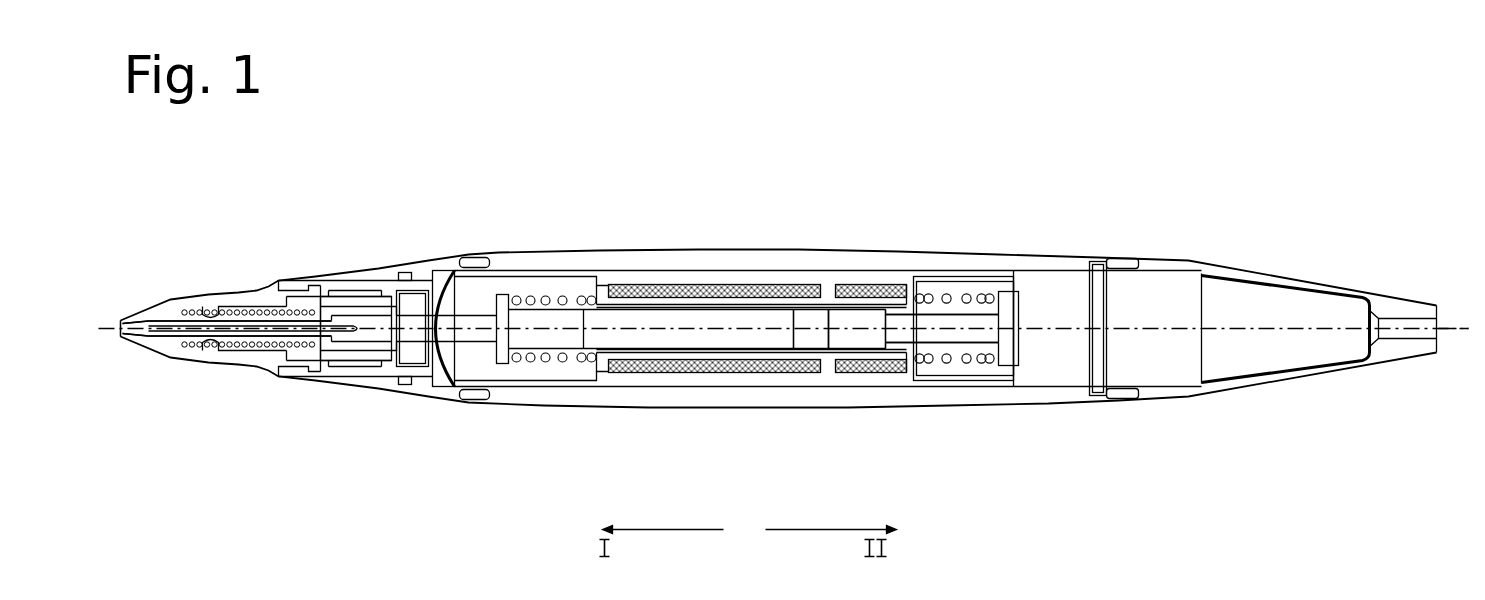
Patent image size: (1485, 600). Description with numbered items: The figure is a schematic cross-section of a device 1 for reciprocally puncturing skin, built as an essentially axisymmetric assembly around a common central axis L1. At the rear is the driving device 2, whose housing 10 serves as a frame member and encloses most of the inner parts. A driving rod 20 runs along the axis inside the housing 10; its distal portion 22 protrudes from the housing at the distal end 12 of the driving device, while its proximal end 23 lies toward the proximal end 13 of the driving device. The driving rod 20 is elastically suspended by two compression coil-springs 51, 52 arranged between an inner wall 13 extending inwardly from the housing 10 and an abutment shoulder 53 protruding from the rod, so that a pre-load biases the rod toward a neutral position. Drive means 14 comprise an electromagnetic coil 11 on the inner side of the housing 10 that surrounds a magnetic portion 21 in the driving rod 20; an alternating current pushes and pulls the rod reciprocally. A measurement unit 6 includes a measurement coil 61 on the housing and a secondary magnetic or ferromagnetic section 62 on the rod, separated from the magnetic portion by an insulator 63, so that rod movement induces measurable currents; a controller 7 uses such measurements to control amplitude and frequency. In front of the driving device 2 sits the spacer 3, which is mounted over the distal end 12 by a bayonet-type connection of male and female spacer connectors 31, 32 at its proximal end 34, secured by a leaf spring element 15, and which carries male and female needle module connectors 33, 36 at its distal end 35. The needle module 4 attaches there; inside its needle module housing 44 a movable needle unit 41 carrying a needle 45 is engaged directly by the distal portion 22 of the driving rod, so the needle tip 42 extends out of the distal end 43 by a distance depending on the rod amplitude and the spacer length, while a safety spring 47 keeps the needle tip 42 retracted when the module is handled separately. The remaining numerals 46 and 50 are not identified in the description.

The device 1 is at (545, 415).
The driving device 2 is at (845, 415).
The spacer 3 is at (452, 243).
The needle module 4 is at (191, 289).
The measurement unit 6 is at (820, 247).
The controller 7 is at (1255, 300).
The housing 10 is at (648, 390).
The electromagnetic coil 11 is at (653, 283).
The distal end of the driving device 12 is at (497, 282).
The inner wall 13 is at (598, 280).
The drive means 14 is at (734, 281).
The leaf spring element 15 is at (417, 288).
The driving rod 20 is at (913, 323).
The magnetic portion 21 is at (707, 283).
The distal portion of the driving rod 22 is at (372, 360).
The proximal end of the driving rod 23 is at (1015, 343).
The male spacer connector 31 is at (470, 400).
The female spacer connector 32 is at (495, 398).
The male needle module connector 33 is at (288, 380).
The proximal end of the spacer 34 is at (492, 256).
The distal end of the spacer 35 is at (283, 278).
The female needle module connector 36 is at (322, 288).
The needle unit 41 is at (368, 294).
The needle tip 42 is at (126, 317).
The distal end of the needle module 43 is at (125, 335).
The needle module housing 44 is at (288, 387).
The needle 45 is at (263, 283).
The connecting rod 46 is at (442, 392).
The safety spring 47 is at (205, 345).
The end plate 50 is at (1033, 317).
The compression coil-spring 51 is at (968, 360).
The compression coil-spring 52 is at (568, 360).
The abutment shoulder 53 is at (527, 282).
The measurement coil 61 is at (883, 335).
The secondary magnetic or ferromagnetic section 62 is at (887, 350).
The insulator 63 is at (817, 345).
The common central axis L1 is at (1457, 326).